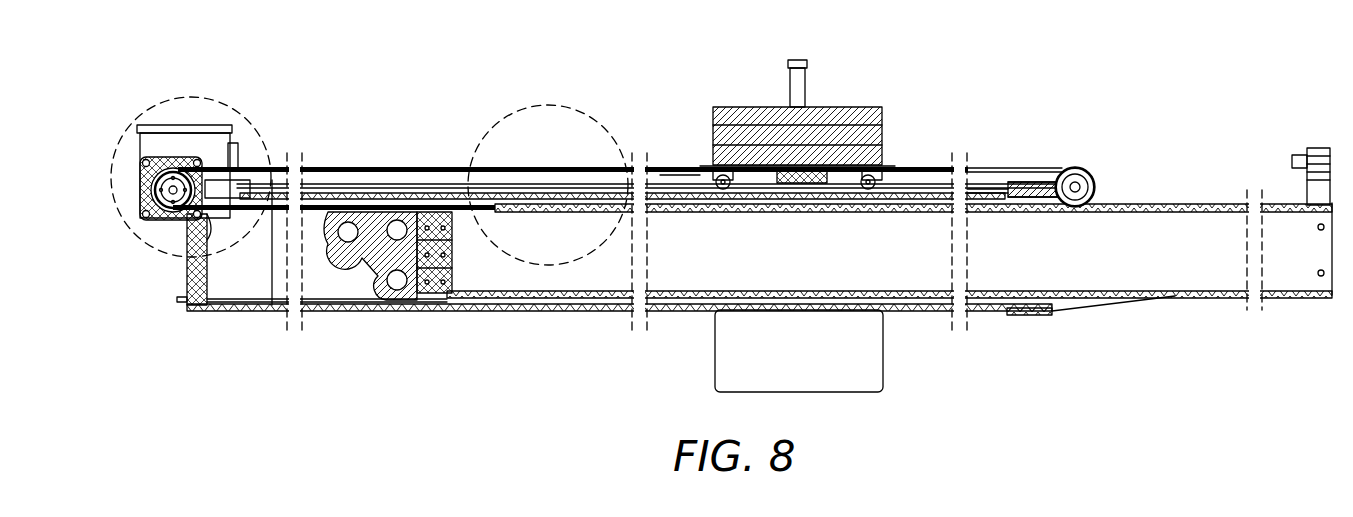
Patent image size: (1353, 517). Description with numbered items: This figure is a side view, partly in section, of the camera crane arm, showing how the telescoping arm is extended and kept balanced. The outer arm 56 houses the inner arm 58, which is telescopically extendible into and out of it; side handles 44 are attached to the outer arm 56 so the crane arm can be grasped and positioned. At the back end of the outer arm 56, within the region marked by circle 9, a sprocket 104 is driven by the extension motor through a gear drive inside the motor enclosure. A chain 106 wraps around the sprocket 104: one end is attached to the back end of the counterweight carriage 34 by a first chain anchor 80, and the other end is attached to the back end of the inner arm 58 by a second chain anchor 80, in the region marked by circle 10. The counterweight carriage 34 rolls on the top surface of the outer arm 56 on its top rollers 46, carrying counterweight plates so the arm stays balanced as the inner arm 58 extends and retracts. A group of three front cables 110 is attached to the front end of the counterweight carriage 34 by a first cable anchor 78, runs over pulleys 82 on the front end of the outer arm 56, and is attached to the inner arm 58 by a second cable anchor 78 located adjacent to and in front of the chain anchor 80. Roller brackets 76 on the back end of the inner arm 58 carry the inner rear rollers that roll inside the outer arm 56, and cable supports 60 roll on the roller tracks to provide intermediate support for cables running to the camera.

The detail circle 9 is at (135, 122).
The detail circle 10 is at (493, 128).
The counterweight carriage 34 is at (862, 117).
The side handles 44 is at (203, 147).
The top rollers 46 is at (720, 183).
The outer arm 56 is at (985, 185).
The inner arm 58 is at (1180, 208).
The cable supports 60 is at (1317, 192).
The roller brackets 76 is at (375, 218).
The cable anchor 78 is at (887, 163).
The chain anchor 80 is at (677, 172).
The pulleys 82 is at (1078, 180).
The sprocket 104 is at (190, 165).
The chain 106 is at (330, 177).
The front cables 110 is at (743, 210).